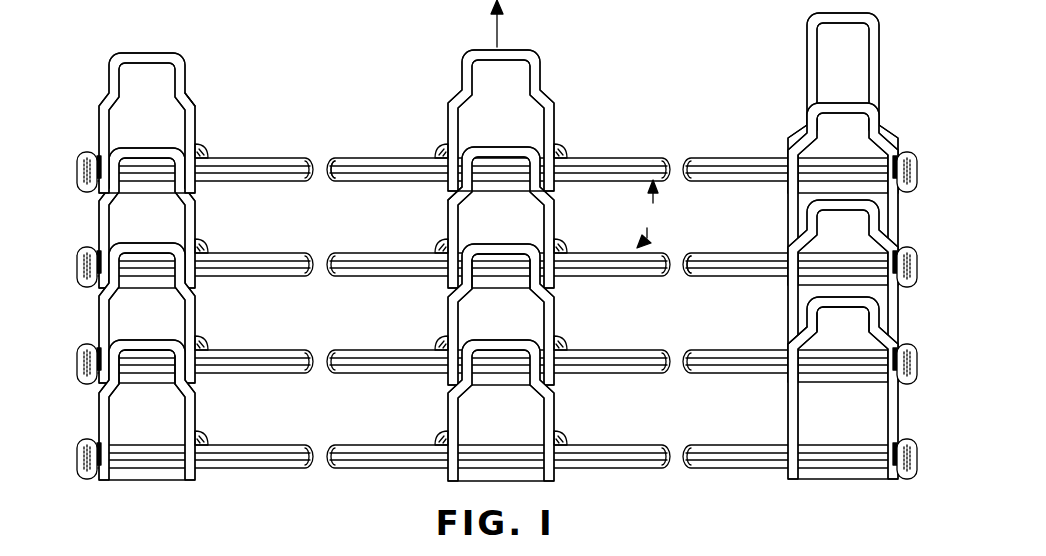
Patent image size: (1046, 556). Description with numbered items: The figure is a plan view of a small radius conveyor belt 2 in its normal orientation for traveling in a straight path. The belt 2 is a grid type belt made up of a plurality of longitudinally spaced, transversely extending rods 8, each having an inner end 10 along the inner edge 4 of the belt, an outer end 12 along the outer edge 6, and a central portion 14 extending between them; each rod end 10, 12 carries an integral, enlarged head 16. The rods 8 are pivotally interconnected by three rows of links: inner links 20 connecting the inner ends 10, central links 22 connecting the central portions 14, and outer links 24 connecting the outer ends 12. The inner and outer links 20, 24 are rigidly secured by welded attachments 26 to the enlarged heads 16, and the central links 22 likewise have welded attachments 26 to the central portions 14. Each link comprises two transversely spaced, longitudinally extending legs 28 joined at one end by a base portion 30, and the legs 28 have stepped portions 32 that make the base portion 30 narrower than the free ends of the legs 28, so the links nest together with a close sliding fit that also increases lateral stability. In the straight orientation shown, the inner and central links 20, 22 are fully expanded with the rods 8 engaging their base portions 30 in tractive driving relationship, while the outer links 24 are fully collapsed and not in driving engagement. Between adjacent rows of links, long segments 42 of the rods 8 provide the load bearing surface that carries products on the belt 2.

The small radius conveyor belt 2 is at (498, 293).
The inner edge 4 is at (84, 232).
The outer edge 6 is at (905, 76).
The rods 8 is at (647, 214).
The inner ends 10 is at (105, 178).
The outer ends 12 is at (868, 165).
The central portions 14 is at (425, 183).
The enlarged head 16 is at (85, 288).
The inner links 20 is at (132, 36).
The central links 22 is at (468, 42).
The outer links 24 is at (792, 40).
The welded attachments 26 is at (83, 152).
The legs 28 is at (178, 392).
The base portion 30 is at (167, 337).
The stepped portions 32 is at (196, 126).
The rod segments 42 is at (338, 183).